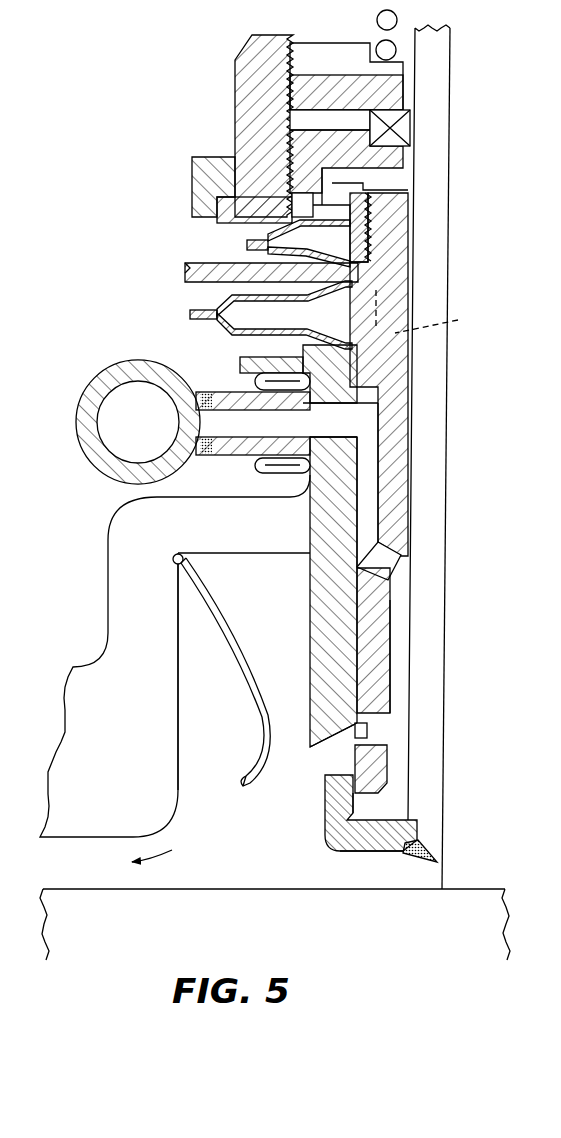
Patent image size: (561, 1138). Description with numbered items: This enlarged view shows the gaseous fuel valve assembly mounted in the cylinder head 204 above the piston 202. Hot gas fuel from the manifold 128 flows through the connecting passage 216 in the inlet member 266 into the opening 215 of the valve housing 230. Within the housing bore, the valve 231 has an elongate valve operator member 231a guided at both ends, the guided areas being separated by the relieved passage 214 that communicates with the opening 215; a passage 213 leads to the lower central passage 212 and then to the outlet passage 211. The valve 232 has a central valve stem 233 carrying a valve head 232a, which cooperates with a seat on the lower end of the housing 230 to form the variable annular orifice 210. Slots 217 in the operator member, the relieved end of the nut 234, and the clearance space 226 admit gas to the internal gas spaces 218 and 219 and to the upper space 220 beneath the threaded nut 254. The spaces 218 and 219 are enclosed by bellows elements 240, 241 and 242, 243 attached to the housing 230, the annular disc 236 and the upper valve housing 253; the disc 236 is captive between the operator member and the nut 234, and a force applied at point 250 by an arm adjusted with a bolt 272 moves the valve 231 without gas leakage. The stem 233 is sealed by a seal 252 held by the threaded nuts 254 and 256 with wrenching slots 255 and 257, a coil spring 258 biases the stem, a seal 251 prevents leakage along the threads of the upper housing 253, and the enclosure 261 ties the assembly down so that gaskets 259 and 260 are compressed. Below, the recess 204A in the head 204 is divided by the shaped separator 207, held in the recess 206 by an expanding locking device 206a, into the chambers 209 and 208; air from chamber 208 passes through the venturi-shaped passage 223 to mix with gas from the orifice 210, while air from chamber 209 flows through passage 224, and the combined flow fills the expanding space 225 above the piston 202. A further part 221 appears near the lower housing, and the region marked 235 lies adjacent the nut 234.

The manifold 128 is at (120, 443).
The piston 202 is at (272, 921).
The cylinder head 204 is at (133, 741).
The recess 204A is at (200, 690).
The recess in cylinder head wall 206 is at (184, 562).
The expanding locking device 206a is at (173, 554).
The shaped separator 207 is at (220, 655).
The second annular chamber 208 is at (293, 691).
The first annular chamber 209 is at (230, 731).
The variable orifice 210 is at (345, 768).
The outlet passage 211 is at (380, 735).
The lower central passage 212 is at (397, 658).
The passage in valve operator member 213 is at (393, 561).
The passage 214 is at (370, 530).
The opening 215 is at (370, 440).
The connecting passage 216 is at (200, 428).
The slots 217 is at (433, 311).
The internal gas space 218 is at (260, 315).
The internal gas space 219 is at (258, 242).
The upper space 220 is at (407, 176).
The foot bracket 221 is at (388, 805).
The connecting passage 223 is at (298, 811).
The passage 224 is at (227, 811).
The space 225 is at (93, 876).
The clearance space 226 is at (410, 385).
The valve housing 230 is at (296, 546).
The valve 231 is at (388, 773).
The valve operator member 231a is at (398, 637).
The valve 232 is at (378, 853).
The valve head 232a is at (404, 837).
The valve stem 233 is at (433, 693).
The nut 234 is at (370, 248).
The threaded sleeve 235 is at (407, 190).
The annular disc 236 is at (183, 276).
The bellows element 240 is at (217, 320).
The bellows element 241 is at (217, 310).
The bellows element 242 is at (200, 262).
The bellows element 243 is at (263, 238).
The force application point 250 is at (183, 264).
The seal 251 is at (292, 208).
The seal 252 is at (413, 128).
The upper valve housing 253 is at (300, 136).
The threaded nut 254 is at (397, 163).
The wrenching slot 255 is at (298, 125).
The threaded nut 256 is at (298, 97).
The wrenching slot 257 is at (353, 68).
The coil spring 258 is at (377, 21).
The gasket 259 is at (300, 473).
The gasket 260 is at (255, 380).
The valve assembly enclosure 261 is at (195, 180).
The inlet member 266 is at (242, 456).
The bolt 272 is at (549, 413).